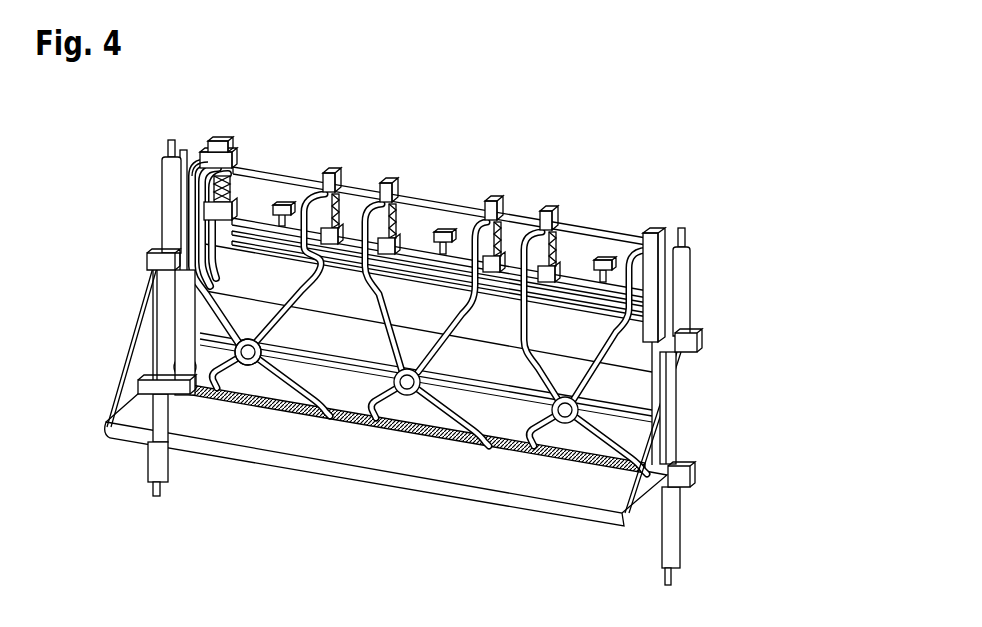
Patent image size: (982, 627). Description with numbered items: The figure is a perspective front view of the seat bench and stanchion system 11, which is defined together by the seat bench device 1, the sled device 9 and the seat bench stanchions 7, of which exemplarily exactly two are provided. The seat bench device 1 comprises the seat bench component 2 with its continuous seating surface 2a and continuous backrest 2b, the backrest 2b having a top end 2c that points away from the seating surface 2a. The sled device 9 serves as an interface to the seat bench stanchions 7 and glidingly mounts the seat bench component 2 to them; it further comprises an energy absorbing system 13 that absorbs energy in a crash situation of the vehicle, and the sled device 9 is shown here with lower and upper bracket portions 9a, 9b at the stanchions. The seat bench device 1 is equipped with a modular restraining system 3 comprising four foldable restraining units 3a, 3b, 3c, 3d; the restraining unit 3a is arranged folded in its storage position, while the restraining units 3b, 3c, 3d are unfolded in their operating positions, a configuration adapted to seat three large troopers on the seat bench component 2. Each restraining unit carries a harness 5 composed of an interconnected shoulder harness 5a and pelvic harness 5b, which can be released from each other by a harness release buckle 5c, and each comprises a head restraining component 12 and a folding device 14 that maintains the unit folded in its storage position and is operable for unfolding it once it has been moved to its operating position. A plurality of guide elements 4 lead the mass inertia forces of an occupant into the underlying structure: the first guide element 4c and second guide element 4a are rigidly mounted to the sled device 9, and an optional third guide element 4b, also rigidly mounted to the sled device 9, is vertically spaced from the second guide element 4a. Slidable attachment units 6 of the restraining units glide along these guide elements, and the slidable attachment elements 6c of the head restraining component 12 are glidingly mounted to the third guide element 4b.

The seat bench device 1 is at (376, 516).
The seat bench component 2 is at (131, 455).
The seating surface 2a is at (143, 420).
The backrest 2b is at (566, 276).
The top end 2c is at (577, 330).
The modular restraining system 3 is at (204, 138).
The restraining unit 3a is at (238, 142).
The restraining unit 3b is at (330, 170).
The restraining unit 3c is at (400, 184).
The restraining unit 3d is at (656, 226).
The guide elements 4 is at (514, 210).
The second guide element 4a is at (352, 240).
The third guide element 4b is at (420, 250).
The first guide element 4c is at (576, 450).
The harness 5 is at (249, 368).
The shoulder harness 5a is at (278, 445).
The pelvic harness 5b is at (165, 398).
The harness release buckle 5c is at (407, 397).
The slidable attachment units 6 is at (245, 158).
The slidable attachment elements 6c is at (188, 146).
The seat bench stanchions 7 is at (163, 166).
The sled device 9 is at (150, 246).
The upper bracket 9a is at (146, 262).
The lower bracket 9b is at (140, 384).
The seat bench and stanchion system 11 is at (663, 110).
The head restraining component 12 is at (178, 198).
The energy absorbing system 13 is at (168, 318).
The folding device 14 is at (288, 194).